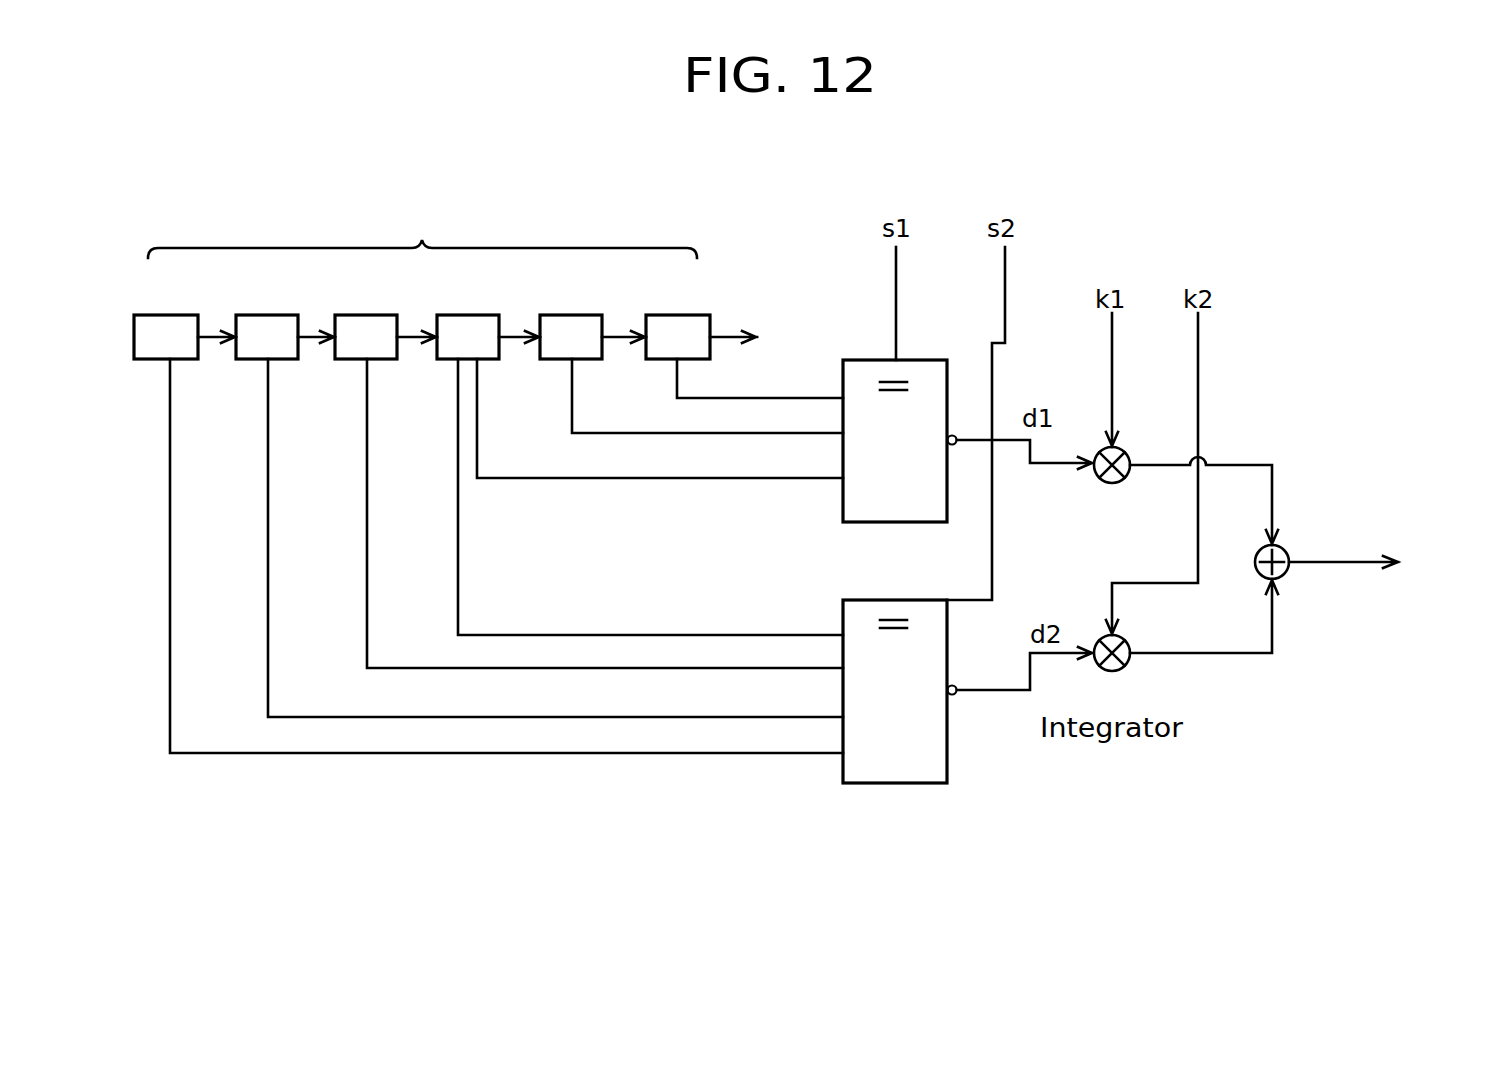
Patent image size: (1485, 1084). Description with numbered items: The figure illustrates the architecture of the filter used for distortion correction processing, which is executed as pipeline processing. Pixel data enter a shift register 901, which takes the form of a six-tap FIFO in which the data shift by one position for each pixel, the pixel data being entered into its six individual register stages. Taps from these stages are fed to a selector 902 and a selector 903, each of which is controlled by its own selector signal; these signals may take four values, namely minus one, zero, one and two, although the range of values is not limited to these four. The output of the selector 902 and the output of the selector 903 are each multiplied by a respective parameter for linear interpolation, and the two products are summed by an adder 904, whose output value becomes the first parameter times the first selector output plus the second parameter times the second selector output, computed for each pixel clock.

The shift register 901 is at (445, 251).
The selector 902 is at (809, 448).
The selector 903 is at (809, 710).
The adder 904 is at (1353, 488).